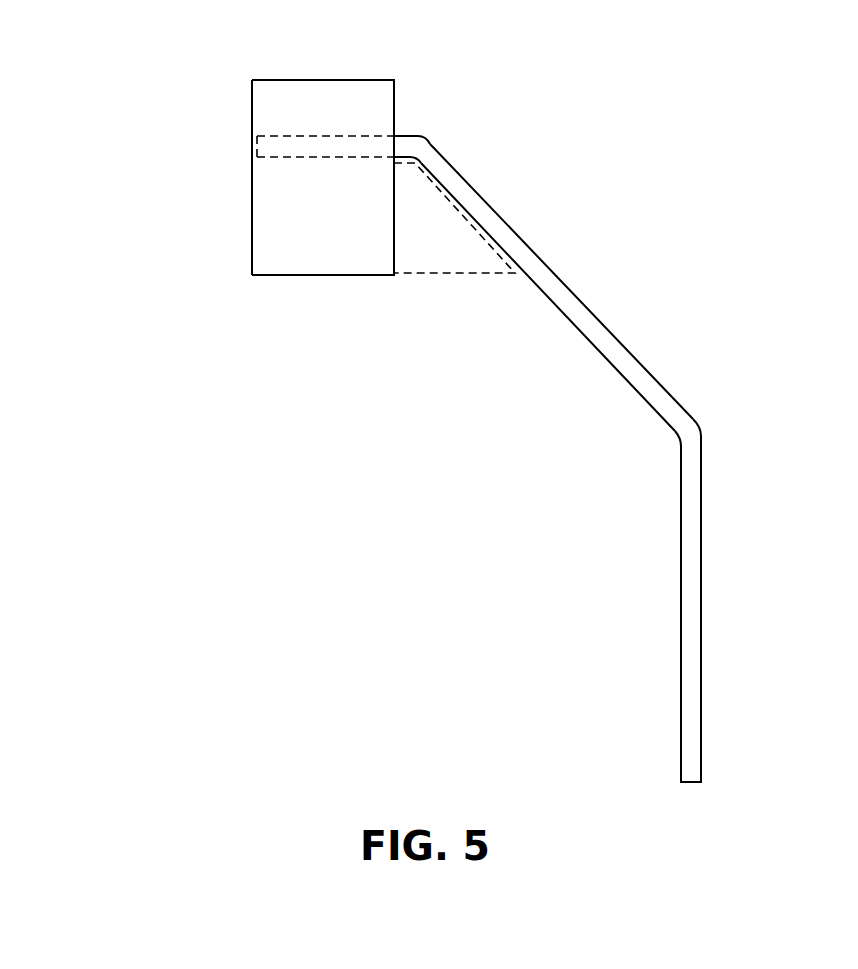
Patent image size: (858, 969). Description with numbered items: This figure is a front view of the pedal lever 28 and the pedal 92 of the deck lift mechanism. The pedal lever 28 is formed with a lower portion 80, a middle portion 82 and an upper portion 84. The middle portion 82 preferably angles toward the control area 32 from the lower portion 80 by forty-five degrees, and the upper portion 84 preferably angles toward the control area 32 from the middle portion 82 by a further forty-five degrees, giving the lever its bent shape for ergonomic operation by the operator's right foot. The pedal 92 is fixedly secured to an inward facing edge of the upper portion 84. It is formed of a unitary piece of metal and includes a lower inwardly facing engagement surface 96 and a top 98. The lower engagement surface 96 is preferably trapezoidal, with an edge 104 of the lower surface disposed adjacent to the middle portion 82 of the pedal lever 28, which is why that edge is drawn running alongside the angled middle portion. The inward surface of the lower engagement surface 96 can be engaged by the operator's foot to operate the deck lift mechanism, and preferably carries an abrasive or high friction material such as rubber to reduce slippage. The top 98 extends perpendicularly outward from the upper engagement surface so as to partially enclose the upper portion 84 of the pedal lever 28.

The pedal lever 28 is at (750, 396).
The control area 32 is at (389, 518).
The lower portion 80 is at (702, 630).
The middle portion 82 is at (613, 335).
The upper portion 84 is at (323, 135).
The pedal 92 is at (238, 303).
The lower engagement surface 96 is at (252, 218).
The top 98 is at (252, 97).
The edge 104 is at (460, 203).